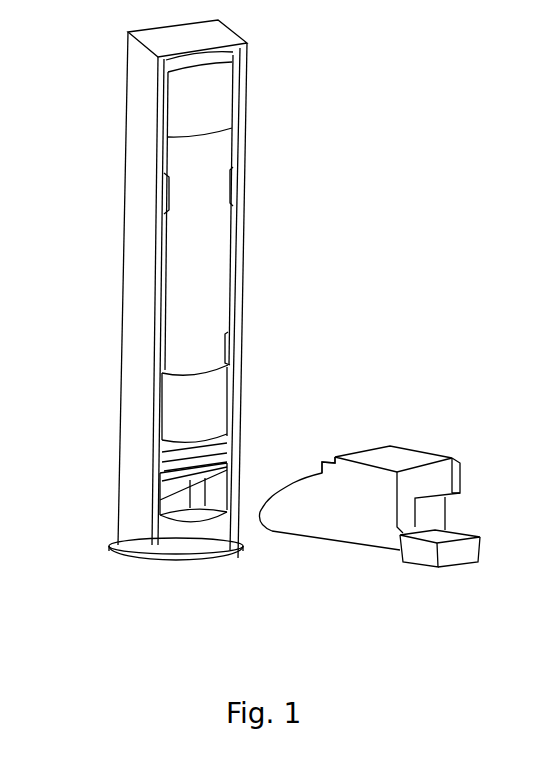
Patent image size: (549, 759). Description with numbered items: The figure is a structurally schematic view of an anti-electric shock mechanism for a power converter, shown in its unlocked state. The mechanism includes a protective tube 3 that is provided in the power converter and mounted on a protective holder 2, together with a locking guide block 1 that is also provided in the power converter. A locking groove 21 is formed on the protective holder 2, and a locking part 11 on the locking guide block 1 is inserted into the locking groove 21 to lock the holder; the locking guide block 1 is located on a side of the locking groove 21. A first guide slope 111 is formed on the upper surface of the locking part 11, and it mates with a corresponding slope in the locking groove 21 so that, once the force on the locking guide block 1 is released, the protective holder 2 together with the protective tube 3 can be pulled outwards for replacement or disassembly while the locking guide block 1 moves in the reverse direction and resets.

The locking guide block 1 is at (348, 499).
The locking part 11 is at (288, 513).
The first guide slope 111 is at (287, 480).
The protective holder 2 is at (138, 282).
The locking groove 21 is at (165, 505).
The protective tube 3 is at (220, 248).